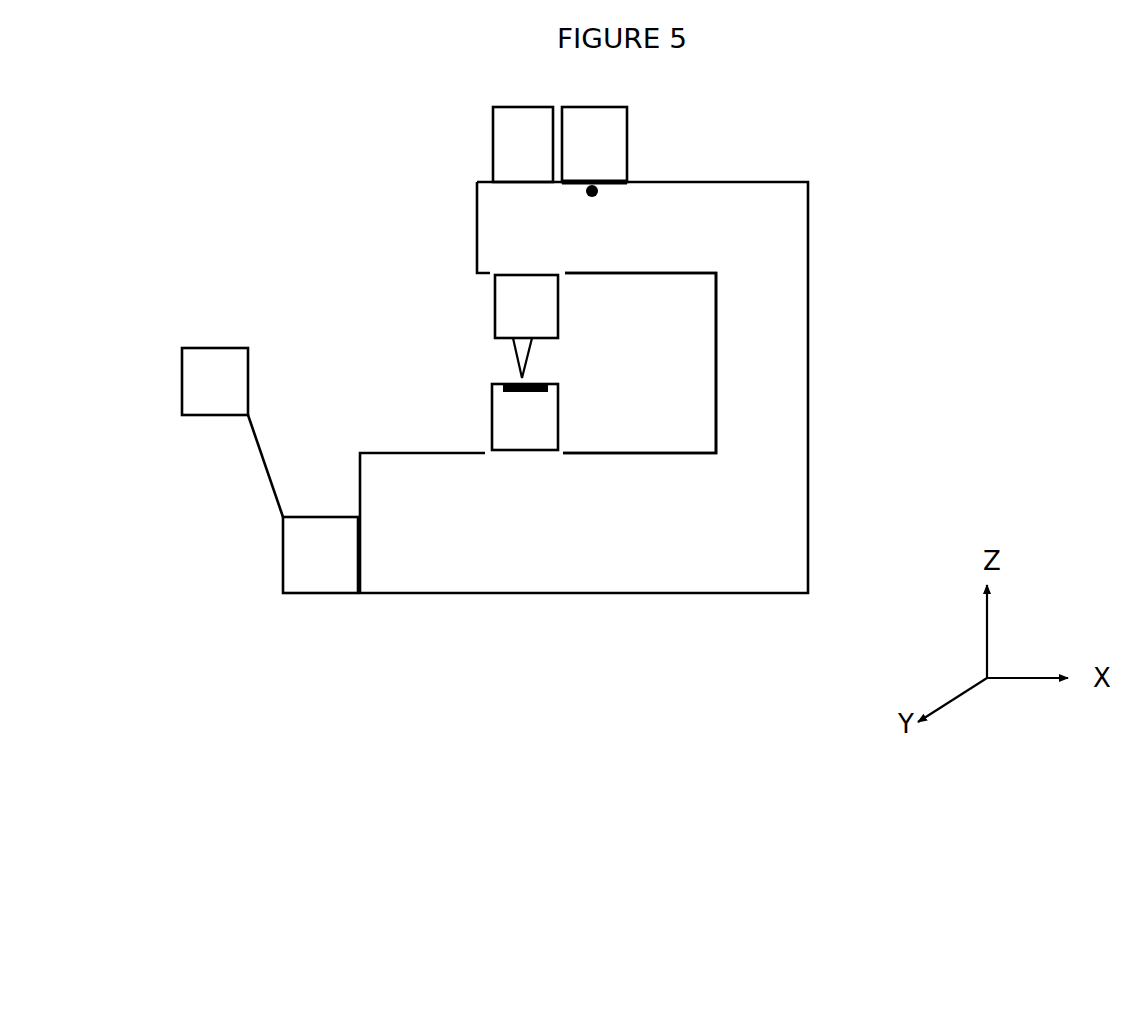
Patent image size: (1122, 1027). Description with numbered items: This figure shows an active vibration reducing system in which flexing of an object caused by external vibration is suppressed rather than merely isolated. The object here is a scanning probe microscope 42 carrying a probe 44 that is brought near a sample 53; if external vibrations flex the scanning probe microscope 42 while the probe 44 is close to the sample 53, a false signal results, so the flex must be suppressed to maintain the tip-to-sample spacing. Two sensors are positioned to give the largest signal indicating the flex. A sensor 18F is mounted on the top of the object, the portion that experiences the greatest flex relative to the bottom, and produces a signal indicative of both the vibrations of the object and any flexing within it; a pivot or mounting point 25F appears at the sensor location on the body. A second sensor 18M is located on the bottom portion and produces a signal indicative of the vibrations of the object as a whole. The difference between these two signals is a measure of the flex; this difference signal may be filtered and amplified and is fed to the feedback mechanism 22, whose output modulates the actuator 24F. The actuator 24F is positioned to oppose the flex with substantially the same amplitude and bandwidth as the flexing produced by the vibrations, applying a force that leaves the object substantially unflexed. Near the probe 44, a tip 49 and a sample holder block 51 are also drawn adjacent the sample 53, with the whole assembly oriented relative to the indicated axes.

The scanning probe microscope 42 is at (432, 531).
The actuator 24F is at (482, 144).
The sensor 18F is at (652, 137).
The fixed pivot 25F is at (603, 198).
The probe 44 is at (492, 312).
The tip / probe 49 is at (512, 358).
The sample block 51 is at (522, 419).
The sample 53 is at (660, 377).
The feedback mechanism 22 is at (187, 421).
The second sensor 18M is at (303, 610).